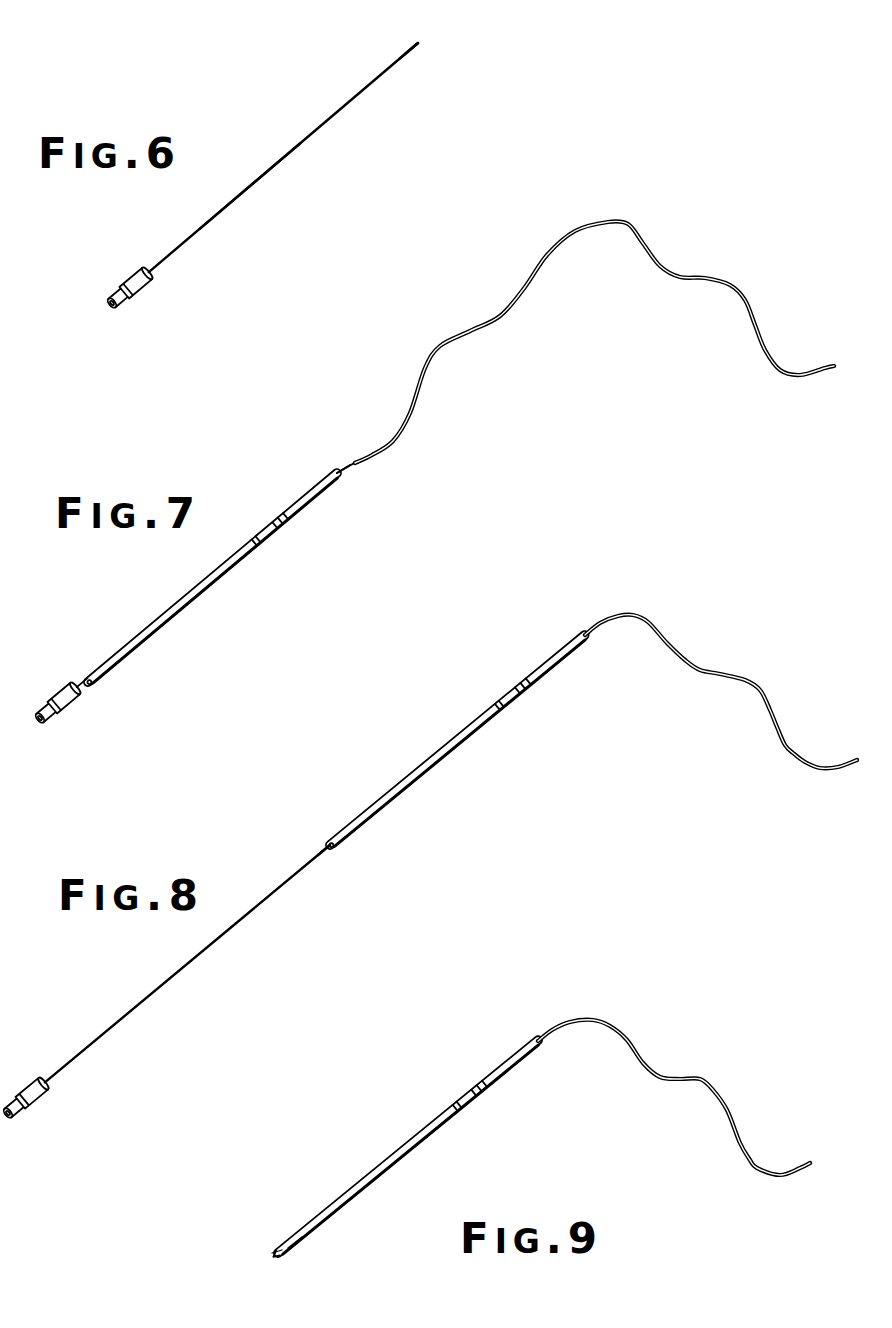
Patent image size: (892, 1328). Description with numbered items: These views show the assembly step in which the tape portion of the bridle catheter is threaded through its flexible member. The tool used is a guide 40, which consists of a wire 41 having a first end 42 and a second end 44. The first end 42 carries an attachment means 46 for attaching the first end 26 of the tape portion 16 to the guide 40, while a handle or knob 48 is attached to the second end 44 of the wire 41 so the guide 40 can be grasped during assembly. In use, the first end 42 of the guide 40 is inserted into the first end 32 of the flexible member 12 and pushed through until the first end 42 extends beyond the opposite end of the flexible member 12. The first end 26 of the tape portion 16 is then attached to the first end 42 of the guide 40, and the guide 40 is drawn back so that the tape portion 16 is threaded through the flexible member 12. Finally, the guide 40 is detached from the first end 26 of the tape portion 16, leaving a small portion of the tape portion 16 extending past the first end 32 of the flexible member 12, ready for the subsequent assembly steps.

In FIG. 7, the flexible member 12 is at (218, 582).
In FIG. 8, the flexible member 12 is at (462, 746).
In FIG. 9, the flexible member 12 is at (415, 1150).
In FIG. 7, the tape portion 16 is at (508, 313).
In FIG. 8, the tape portion 16 is at (668, 648).
In FIG. 9, the tape portion 16 is at (643, 1063).
In FIG. 7, the first end of the tape portion 26 is at (360, 466).
In FIG. 8, the first end of the tape portion 26 is at (325, 848).
In FIG. 9, the first end of the tape portion 26 is at (280, 1258).
In FIG. 8, the first end of the flexible member 32 is at (345, 840).
In FIG. 9, the first end of the flexible member 32 is at (322, 1225).
In FIG. 6, the guide 40 is at (384, 144).
In FIG. 8, the guide 40 is at (178, 1024).
In FIG. 6, the wire 41 is at (248, 189).
In FIG. 6, the first end of the guide 42 is at (412, 52).
In FIG. 6, the second end of the wire 44 is at (150, 283).
In FIG. 6, the attachment means 46 is at (418, 43).
In FIG. 7, the attachment means 46 is at (345, 462).
In FIG. 6, the handle or knob 48 is at (118, 308).
In FIG. 8, the handle or knob 48 is at (46, 1090).